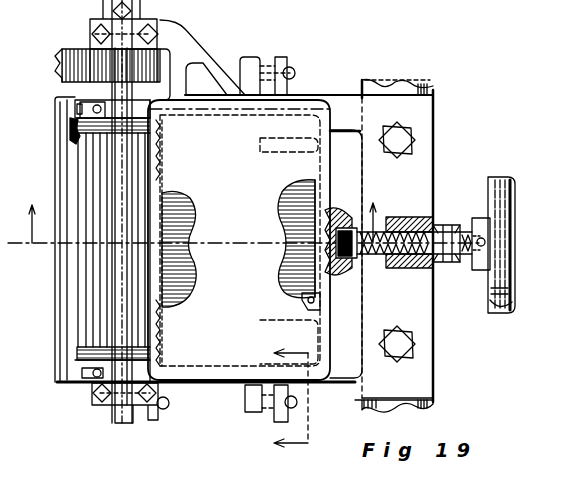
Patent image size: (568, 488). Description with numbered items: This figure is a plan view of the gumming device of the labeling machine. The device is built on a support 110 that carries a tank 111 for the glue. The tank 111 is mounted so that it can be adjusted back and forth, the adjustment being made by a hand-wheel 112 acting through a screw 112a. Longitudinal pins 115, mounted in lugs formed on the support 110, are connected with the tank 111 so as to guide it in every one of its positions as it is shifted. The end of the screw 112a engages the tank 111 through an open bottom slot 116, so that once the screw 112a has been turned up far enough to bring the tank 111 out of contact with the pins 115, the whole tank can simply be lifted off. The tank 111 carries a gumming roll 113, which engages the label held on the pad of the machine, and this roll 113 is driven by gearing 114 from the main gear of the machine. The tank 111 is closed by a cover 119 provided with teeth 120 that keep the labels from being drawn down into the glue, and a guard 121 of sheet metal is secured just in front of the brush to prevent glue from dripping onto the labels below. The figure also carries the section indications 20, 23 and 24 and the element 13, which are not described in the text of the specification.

The frame plate 13 is at (431, 90).
The section line 20 is at (203, 212).
The section line 23 is at (277, 399).
The section line / adjusting nut 24 is at (358, 190).
The support 110 is at (346, 255).
The tank 111 is at (217, 383).
The hand-wheel 112 is at (498, 310).
The screw 112a is at (476, 222).
The gumming roll 113 is at (437, 173).
The gearing 114 is at (73, 34).
The longitudinal pins 115 is at (293, 75).
The open bottom slot 116 is at (70, 128).
The cover 119 is at (239, 240).
The teeth 120 is at (160, 167).
The guard 121 is at (60, 289).